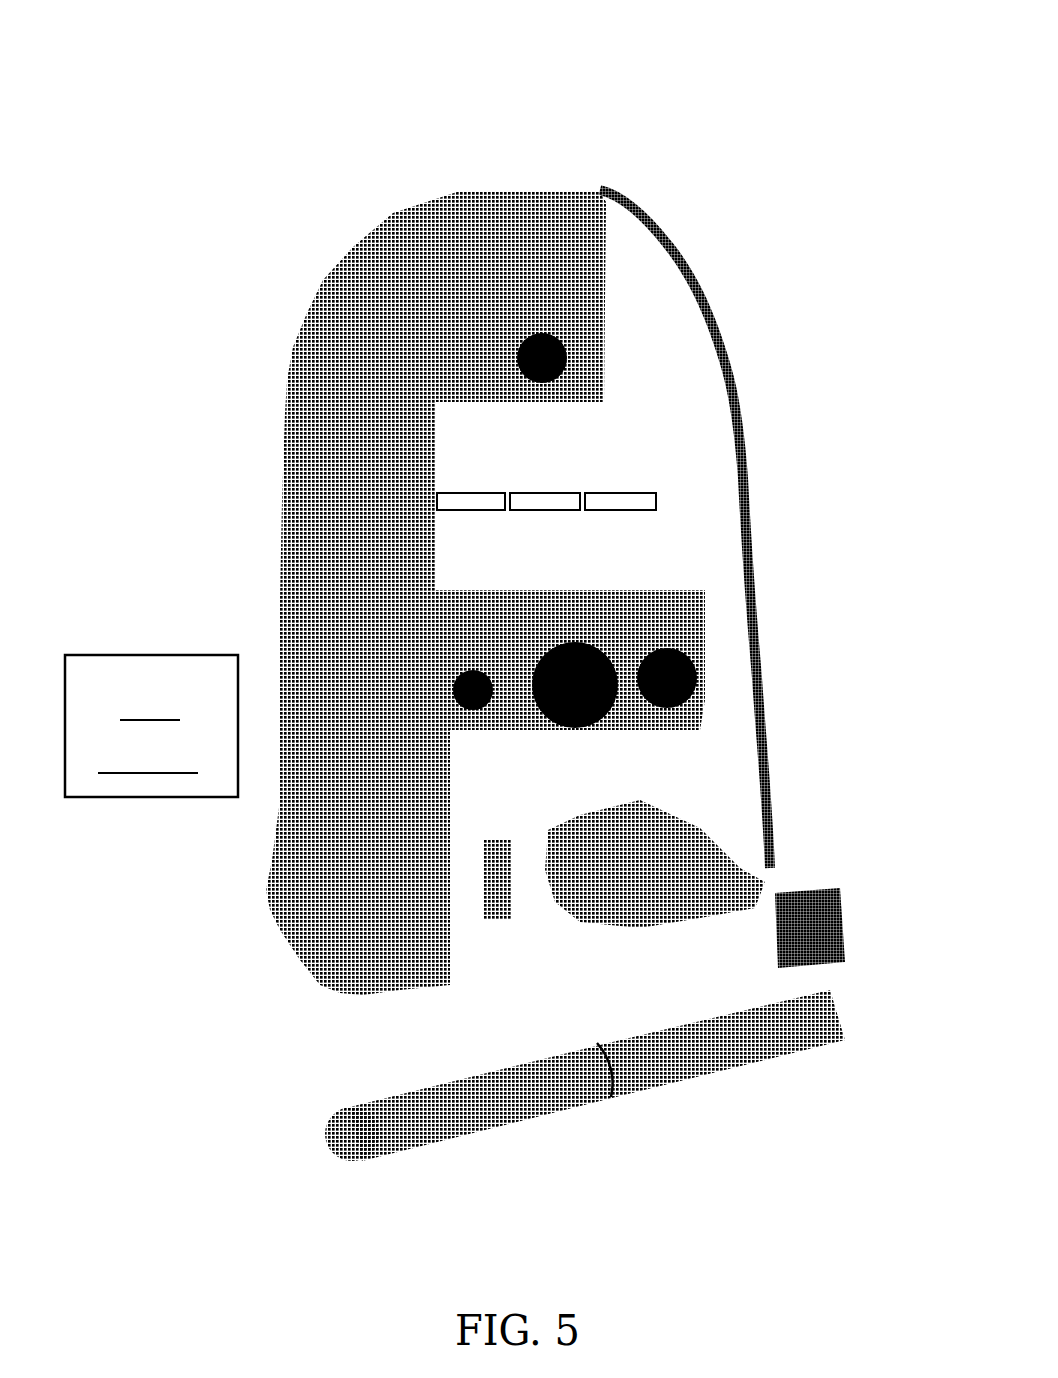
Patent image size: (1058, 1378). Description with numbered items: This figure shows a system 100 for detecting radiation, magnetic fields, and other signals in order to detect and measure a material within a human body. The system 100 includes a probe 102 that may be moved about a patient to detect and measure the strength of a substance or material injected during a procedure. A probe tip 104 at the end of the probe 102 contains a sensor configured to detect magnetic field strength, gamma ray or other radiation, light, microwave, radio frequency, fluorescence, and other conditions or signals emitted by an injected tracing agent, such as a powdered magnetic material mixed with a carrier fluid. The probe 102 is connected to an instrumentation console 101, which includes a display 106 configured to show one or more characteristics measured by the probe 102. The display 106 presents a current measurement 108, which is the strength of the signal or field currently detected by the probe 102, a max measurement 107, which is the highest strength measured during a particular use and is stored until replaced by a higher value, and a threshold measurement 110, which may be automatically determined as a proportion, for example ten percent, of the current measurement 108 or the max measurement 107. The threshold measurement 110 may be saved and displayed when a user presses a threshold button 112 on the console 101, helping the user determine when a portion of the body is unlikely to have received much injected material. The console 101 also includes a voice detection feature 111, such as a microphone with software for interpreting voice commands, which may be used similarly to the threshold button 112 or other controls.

The system 100 is at (775, 124).
The instrumentation console 101 is at (549, 174).
The probe 102 is at (595, 1115).
The probe tip 104 is at (357, 1133).
The display 106 is at (435, 474).
The max measurement 107 is at (463, 567).
The current measurement 108 is at (630, 458).
The threshold measurement 110 is at (645, 556).
The voice detection feature 111 is at (377, 720).
The threshold button 112 is at (516, 360).